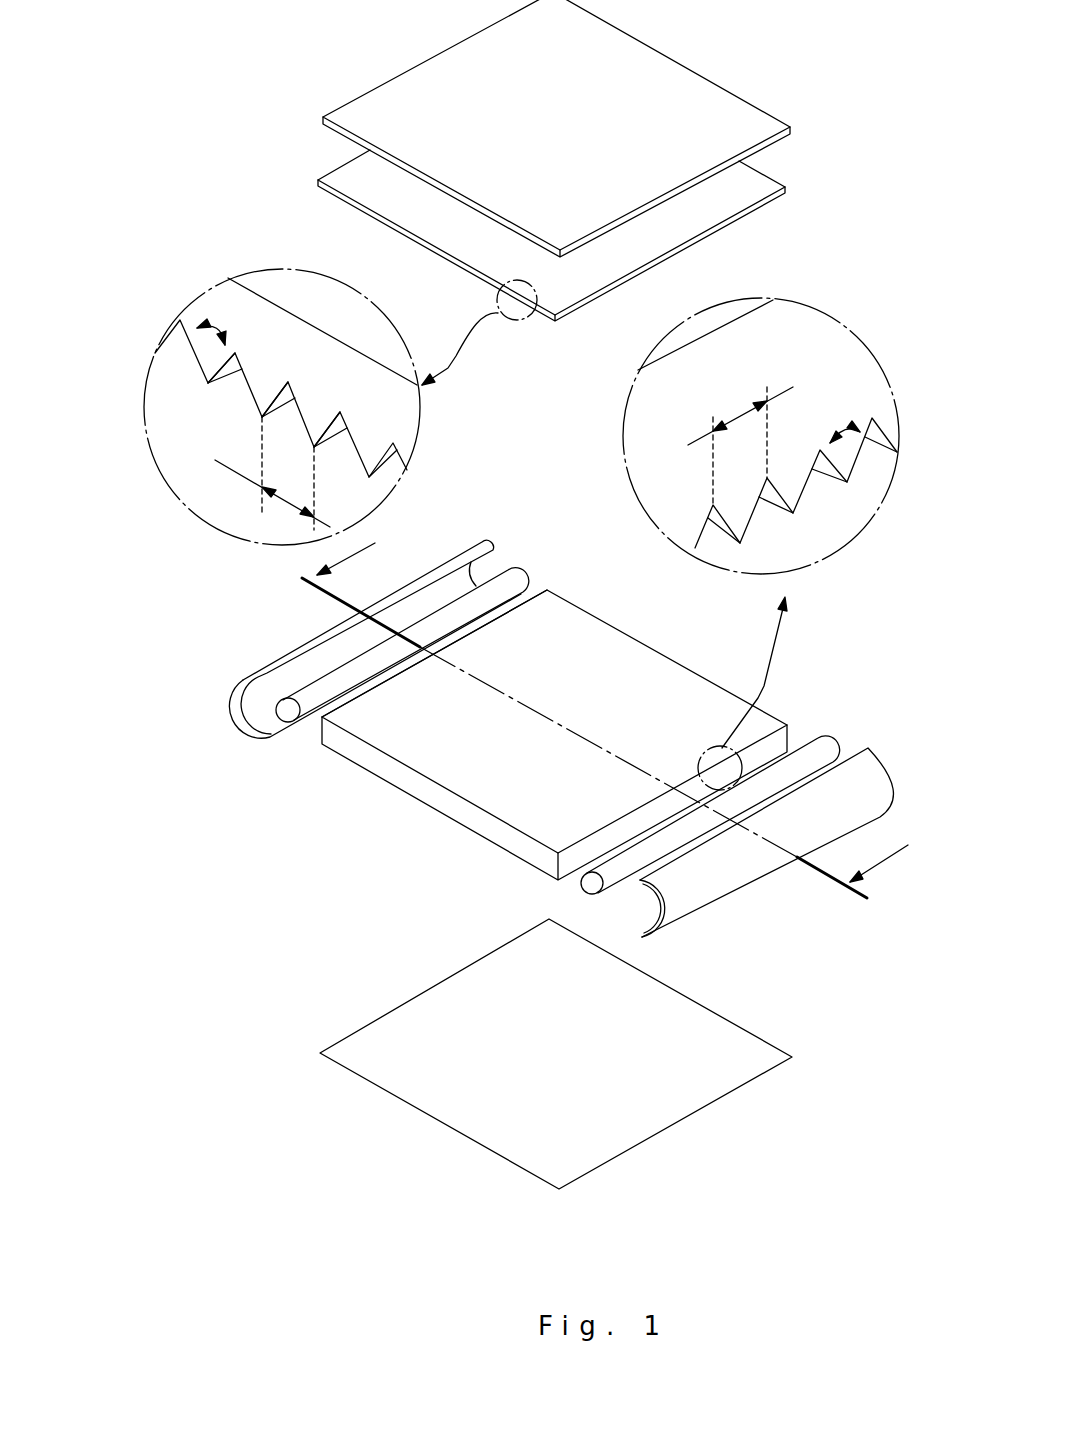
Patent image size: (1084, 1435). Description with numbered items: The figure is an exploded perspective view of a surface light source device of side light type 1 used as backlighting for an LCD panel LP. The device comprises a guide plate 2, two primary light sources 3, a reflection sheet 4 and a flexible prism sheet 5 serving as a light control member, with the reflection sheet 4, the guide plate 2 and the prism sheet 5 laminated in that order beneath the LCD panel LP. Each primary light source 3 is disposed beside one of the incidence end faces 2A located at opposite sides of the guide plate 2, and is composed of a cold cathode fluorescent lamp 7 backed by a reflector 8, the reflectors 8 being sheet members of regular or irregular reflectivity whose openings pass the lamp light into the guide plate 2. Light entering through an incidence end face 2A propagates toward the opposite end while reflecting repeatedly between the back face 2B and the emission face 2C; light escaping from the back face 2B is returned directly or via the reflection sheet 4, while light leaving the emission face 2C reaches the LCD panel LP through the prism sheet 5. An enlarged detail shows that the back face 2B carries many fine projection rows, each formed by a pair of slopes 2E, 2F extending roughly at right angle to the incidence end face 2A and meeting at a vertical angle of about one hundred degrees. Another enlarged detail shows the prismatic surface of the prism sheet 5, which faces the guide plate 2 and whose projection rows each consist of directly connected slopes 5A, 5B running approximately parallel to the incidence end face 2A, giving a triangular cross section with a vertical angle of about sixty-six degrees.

The surface light source device of side light type 1 is at (357, 1172).
The guide plate 2 is at (603, 594).
The incidence end face 2A is at (773, 742).
The back face 2B is at (402, 798).
The emission face 2C is at (572, 623).
The slope 2E is at (827, 468).
The slope 2F is at (757, 517).
The primary light source 3 is at (533, 791).
The reflection sheet 4 is at (600, 1157).
The prism sheet 5 is at (762, 189).
The slope 5A is at (287, 393).
The slope 5B is at (273, 372).
The fluorescent lamp 7 is at (292, 727).
The reflector 8 is at (258, 702).
The LCD panel LP is at (667, 88).